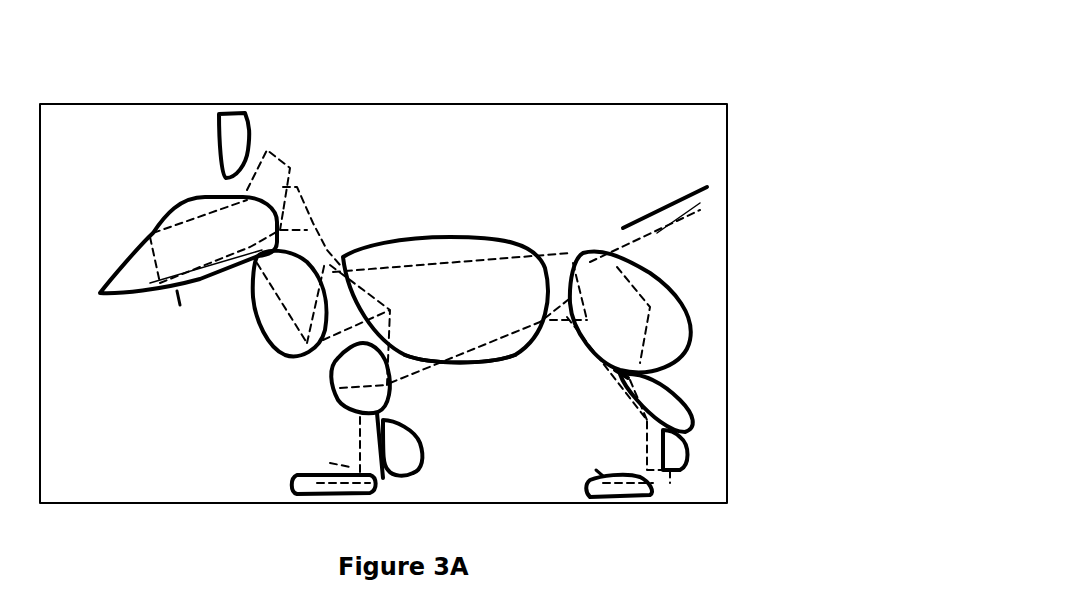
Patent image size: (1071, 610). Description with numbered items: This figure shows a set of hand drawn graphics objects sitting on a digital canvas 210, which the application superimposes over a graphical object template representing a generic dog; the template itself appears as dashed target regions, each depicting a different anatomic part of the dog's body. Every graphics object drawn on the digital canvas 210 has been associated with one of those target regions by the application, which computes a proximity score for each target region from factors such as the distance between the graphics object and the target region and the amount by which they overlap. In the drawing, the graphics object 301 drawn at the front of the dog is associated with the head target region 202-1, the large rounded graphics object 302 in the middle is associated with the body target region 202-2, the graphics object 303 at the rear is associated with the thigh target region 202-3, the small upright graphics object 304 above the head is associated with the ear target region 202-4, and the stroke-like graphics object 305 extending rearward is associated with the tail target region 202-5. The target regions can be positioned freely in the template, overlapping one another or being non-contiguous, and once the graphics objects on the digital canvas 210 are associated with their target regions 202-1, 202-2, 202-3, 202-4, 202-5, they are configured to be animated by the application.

The digital canvas 210 is at (667, 103).
The graphics object 301 is at (143, 237).
The graphics object 302 is at (510, 363).
The graphics object 303 is at (693, 320).
The graphics object 304 is at (217, 117).
The graphics object 305 is at (640, 223).
The target region 202-1 is at (300, 207).
The target region 202-2 is at (438, 247).
The target region 202-3 is at (650, 297).
The target region 202-4 is at (280, 160).
The target region 202-5 is at (683, 220).